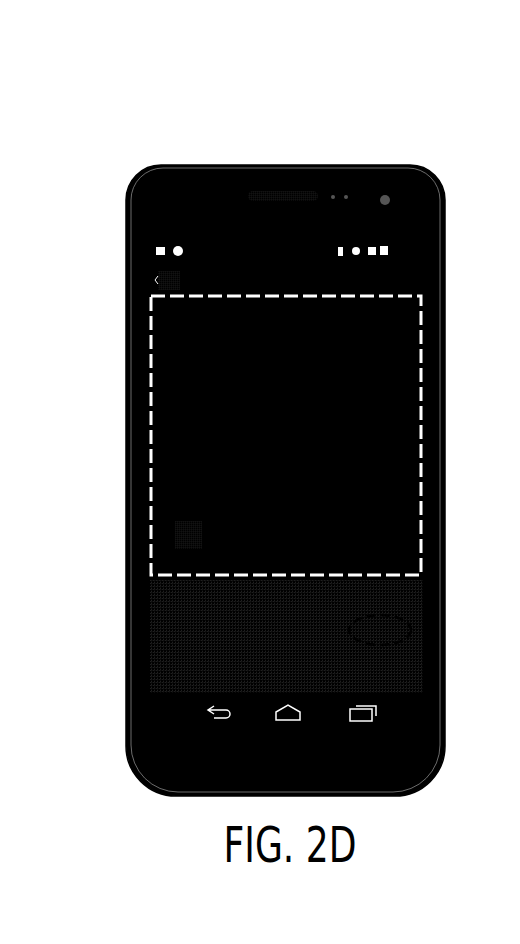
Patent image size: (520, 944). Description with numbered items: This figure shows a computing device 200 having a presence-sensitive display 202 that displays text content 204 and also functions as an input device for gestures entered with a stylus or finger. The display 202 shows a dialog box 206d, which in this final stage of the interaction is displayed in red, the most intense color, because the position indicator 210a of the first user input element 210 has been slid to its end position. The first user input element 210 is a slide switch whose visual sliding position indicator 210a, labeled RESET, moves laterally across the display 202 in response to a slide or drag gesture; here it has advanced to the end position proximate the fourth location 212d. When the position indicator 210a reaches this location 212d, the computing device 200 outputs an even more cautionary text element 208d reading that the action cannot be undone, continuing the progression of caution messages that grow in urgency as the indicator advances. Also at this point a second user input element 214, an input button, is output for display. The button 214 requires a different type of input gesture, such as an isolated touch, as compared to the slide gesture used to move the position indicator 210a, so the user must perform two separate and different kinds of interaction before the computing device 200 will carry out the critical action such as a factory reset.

The computing device 200 is at (291, 98).
The presence-sensitive display 202 is at (142, 294).
The text content 204 is at (162, 322).
The dialog box 206d is at (147, 585).
The text element 208d is at (350, 590).
The first user input element 210 is at (160, 622).
The position indicator 210a is at (396, 620).
The fourth location 212d is at (382, 633).
The second user input element 214 is at (218, 667).